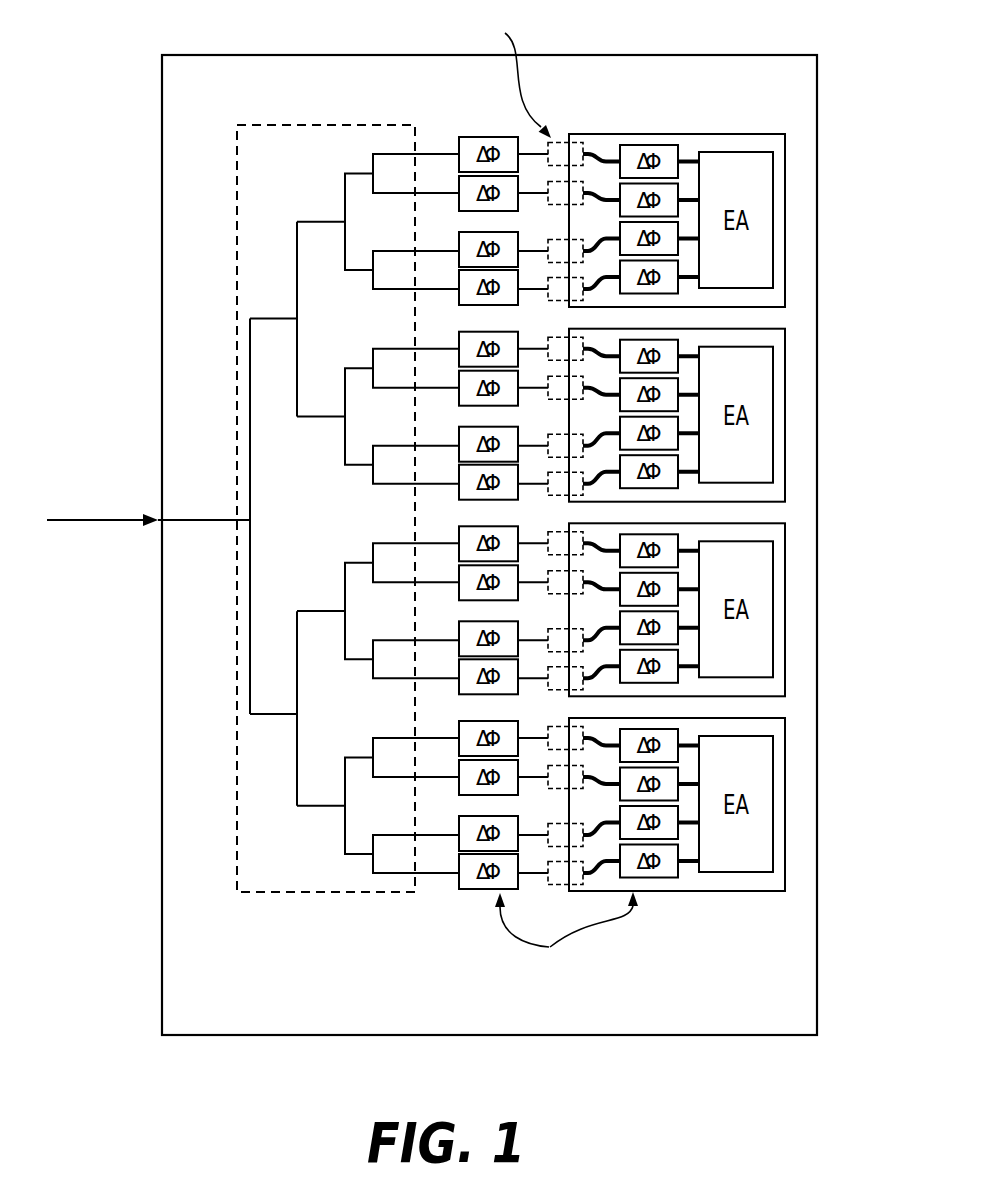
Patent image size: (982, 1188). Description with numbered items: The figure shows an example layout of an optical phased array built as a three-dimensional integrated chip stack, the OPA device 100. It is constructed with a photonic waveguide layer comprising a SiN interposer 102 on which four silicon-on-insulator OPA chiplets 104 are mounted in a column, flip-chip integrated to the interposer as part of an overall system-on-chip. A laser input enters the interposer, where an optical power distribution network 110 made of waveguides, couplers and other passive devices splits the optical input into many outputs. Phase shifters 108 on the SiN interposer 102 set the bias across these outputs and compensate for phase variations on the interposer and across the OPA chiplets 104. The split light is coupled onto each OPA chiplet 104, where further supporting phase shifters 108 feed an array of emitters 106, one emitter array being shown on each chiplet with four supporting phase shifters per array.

The OPA device 100 is at (145, 295).
The SiN interposer 102 is at (765, 77).
The OPA chiplets 104 is at (773, 727).
The array of emitters 106 is at (765, 205).
The phase shifters 108 is at (633, 182).
The optical power distribution network 110 is at (237, 657).